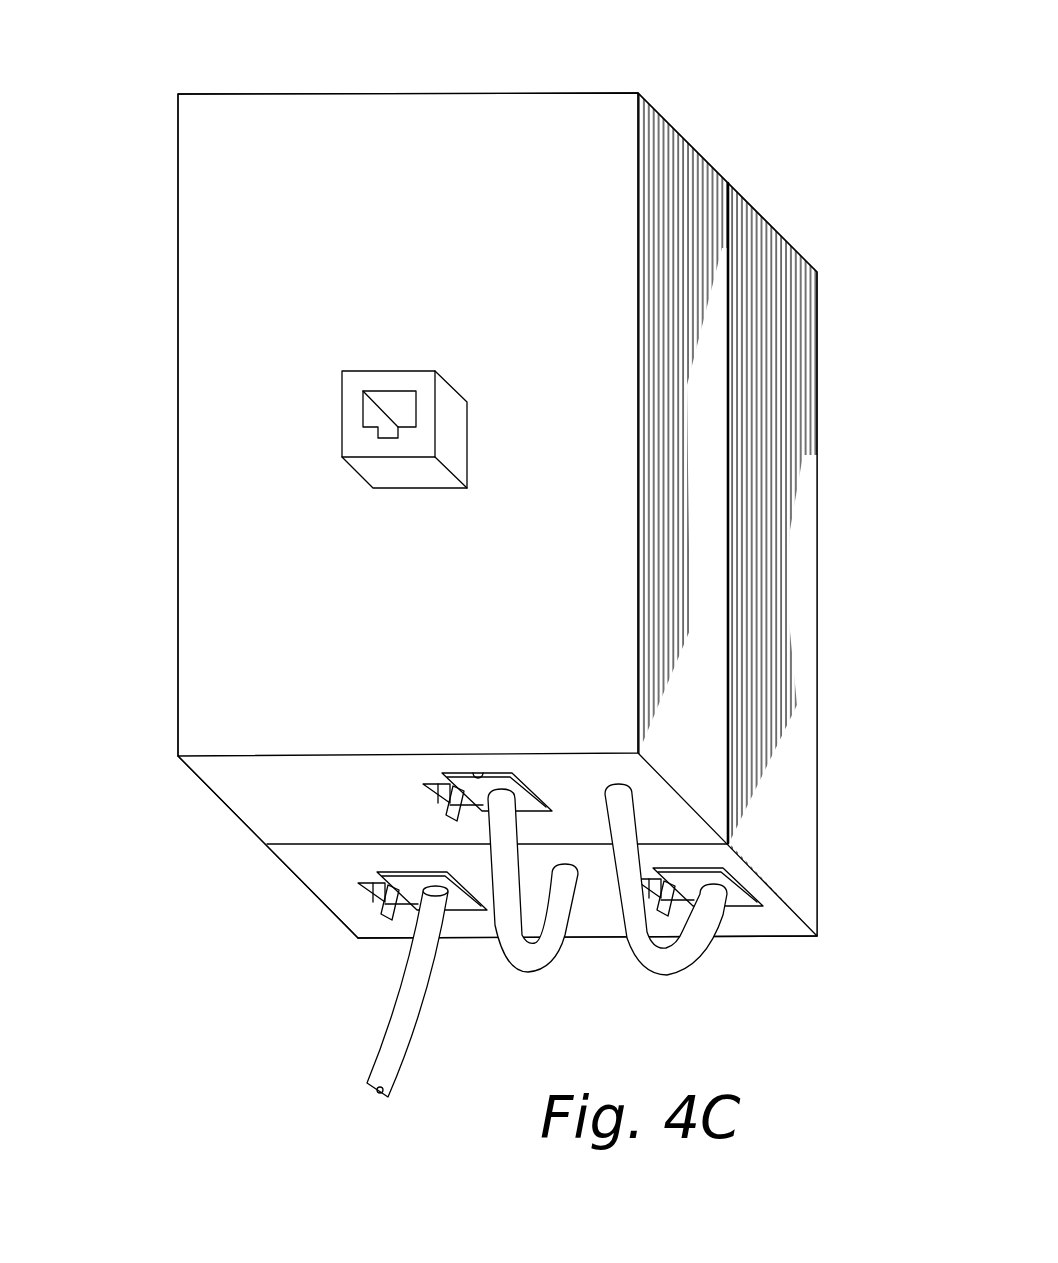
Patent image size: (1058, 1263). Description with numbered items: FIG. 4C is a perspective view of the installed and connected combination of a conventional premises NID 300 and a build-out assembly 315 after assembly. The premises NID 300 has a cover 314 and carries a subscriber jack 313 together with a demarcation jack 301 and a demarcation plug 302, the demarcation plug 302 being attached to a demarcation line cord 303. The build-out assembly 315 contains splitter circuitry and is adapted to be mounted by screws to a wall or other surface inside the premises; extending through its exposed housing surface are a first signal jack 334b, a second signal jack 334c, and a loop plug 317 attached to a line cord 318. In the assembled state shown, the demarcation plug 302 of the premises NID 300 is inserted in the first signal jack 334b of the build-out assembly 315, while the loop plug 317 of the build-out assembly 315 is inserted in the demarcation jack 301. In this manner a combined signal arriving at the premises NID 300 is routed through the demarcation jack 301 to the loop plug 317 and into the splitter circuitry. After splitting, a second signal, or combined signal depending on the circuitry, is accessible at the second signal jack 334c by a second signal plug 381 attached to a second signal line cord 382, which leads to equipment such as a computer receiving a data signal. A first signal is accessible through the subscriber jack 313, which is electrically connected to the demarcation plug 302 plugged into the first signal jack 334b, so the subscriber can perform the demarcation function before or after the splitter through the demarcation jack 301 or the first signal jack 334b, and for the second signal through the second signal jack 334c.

The premises NID 300 is at (197, 81).
The cover 314 is at (545, 130).
The build-out assembly 315 is at (803, 462).
The subscriber jack 313 is at (340, 410).
The demarcation jack 301 is at (470, 772).
The loop plug 317 is at (510, 795).
The first signal jack 334b is at (765, 910).
The second signal jack 334c is at (358, 885).
The demarcation plug 302 is at (735, 900).
The demarcation line cord 303 is at (690, 965).
The line cord 318 is at (547, 960).
The second signal plug 381 is at (458, 905).
The second signal line cord 382 is at (383, 1057).